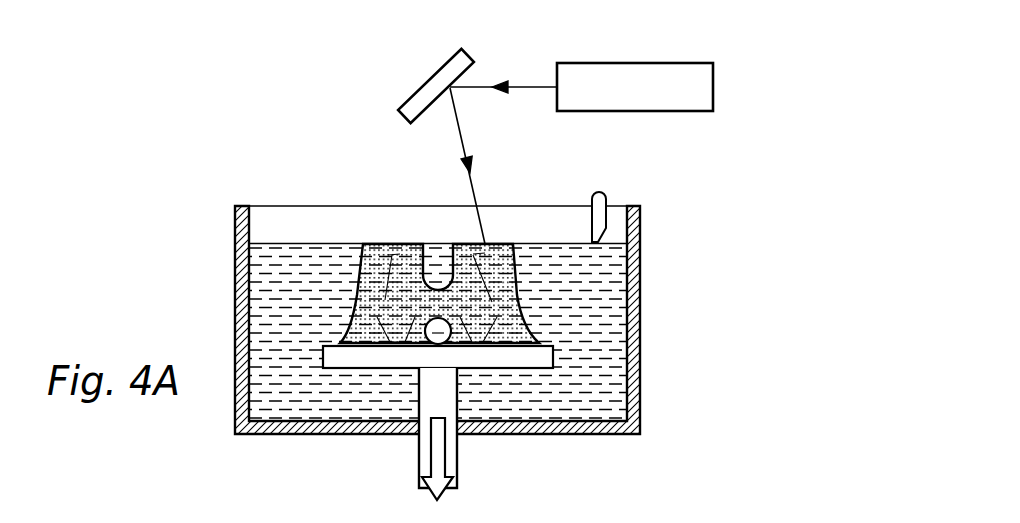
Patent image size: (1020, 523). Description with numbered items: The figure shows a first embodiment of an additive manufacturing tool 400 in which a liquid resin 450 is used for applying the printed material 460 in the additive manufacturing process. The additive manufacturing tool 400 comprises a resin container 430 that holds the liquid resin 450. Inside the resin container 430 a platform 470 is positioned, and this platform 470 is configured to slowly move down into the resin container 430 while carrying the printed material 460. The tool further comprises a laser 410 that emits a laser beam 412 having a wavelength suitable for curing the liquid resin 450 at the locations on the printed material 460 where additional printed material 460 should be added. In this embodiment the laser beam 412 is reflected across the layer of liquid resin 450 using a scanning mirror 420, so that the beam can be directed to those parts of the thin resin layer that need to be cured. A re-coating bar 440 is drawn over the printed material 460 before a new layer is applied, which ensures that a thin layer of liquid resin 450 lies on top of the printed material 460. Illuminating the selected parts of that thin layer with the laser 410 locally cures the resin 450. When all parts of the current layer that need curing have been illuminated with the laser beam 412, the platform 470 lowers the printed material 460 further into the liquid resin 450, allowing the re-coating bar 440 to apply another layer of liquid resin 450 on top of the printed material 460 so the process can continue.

The additive manufacturing tool 400 is at (208, 123).
The laser 410 is at (637, 80).
The laser beam 412 is at (471, 182).
The scanning mirror 420 is at (430, 85).
The resin container 430 is at (485, 326).
The re-coating bar 440 is at (600, 220).
The liquid resin 450 is at (301, 260).
The printed material 460 is at (398, 262).
The platform 470 is at (543, 359).